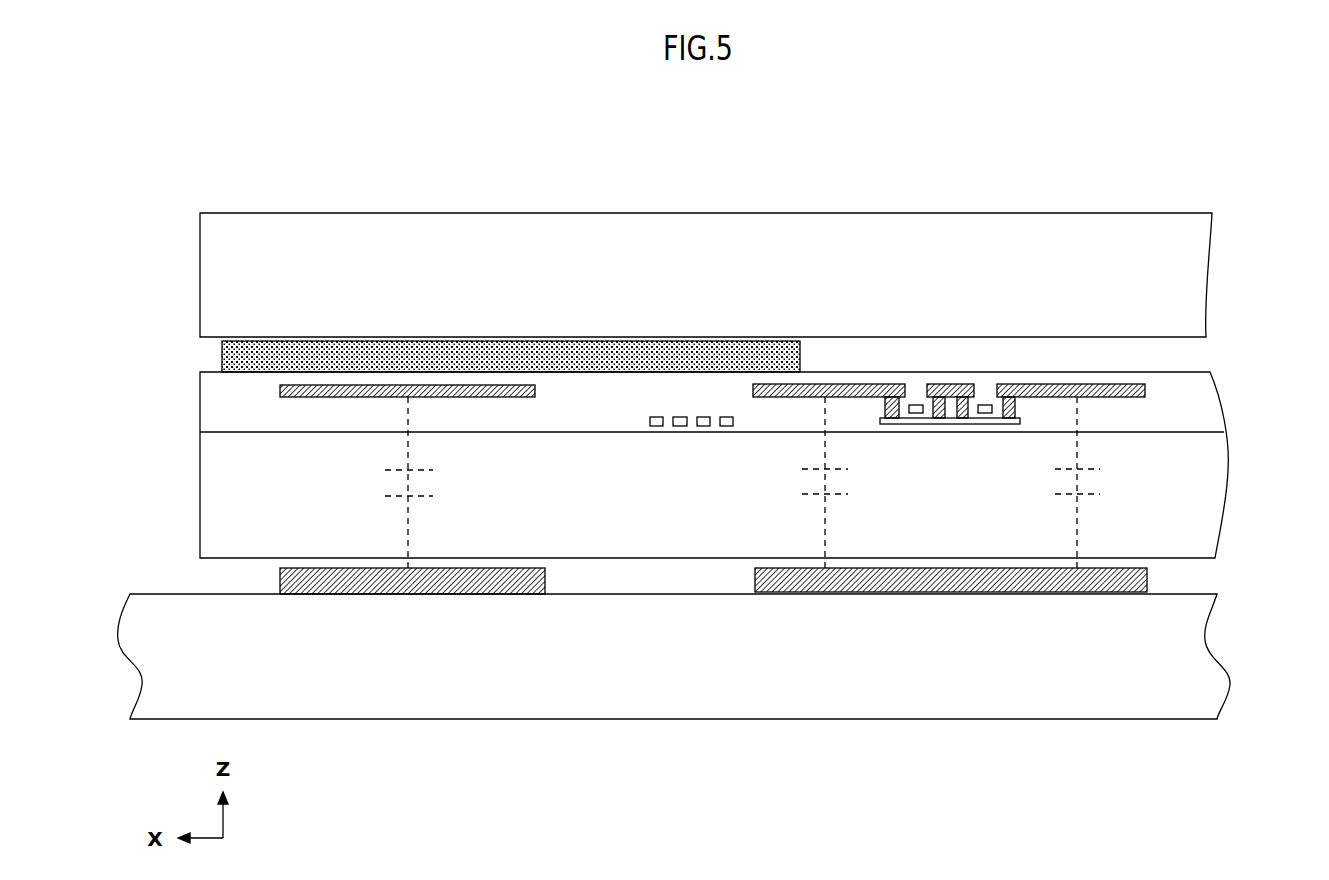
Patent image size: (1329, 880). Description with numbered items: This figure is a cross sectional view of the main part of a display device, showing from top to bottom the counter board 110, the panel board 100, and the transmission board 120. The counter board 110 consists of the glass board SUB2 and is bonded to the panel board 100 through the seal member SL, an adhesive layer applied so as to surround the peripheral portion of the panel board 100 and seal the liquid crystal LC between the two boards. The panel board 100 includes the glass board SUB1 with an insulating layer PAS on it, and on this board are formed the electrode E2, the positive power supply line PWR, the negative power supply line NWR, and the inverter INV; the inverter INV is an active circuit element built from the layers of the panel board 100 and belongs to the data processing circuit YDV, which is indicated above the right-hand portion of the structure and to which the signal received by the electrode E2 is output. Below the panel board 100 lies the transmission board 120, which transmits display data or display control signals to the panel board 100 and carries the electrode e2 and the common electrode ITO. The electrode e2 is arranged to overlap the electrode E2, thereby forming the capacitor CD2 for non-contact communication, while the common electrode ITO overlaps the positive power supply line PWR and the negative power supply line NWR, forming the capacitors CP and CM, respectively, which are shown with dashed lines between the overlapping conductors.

The counter board 110 is at (698, 276).
The panel board 100 is at (705, 465).
The transmission board 120 is at (684, 720).
The glass board of the counter board SUB2 is at (1175, 272).
The glass board of the panel board SUB1 is at (1180, 490).
The insulating layer PAS is at (1180, 400).
The seal member SL is at (515, 350).
The liquid crystal LC is at (955, 345).
The data processing circuit YDV is at (685, 202).
The positive power supply line PWR is at (840, 383).
The negative power supply line NWR is at (1070, 383).
The inverter INV is at (942, 425).
The electrode E2 is at (298, 398).
The capacitor CD2 is at (432, 482).
The capacitor CP is at (803, 482).
The capacitor CM is at (1100, 482).
The electrode e2 is at (465, 594).
The common electrode ITO is at (982, 592).